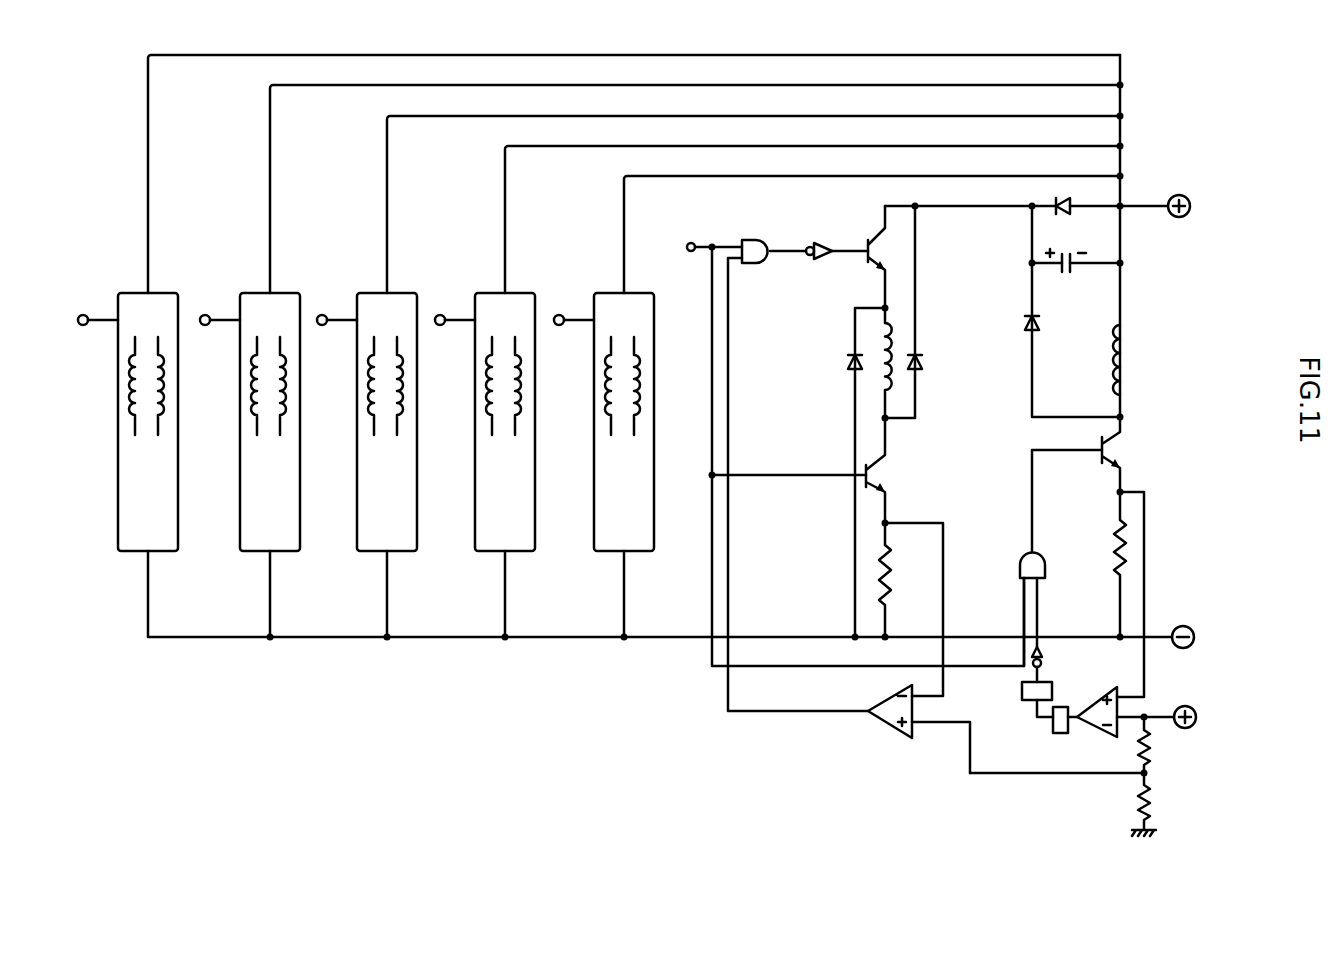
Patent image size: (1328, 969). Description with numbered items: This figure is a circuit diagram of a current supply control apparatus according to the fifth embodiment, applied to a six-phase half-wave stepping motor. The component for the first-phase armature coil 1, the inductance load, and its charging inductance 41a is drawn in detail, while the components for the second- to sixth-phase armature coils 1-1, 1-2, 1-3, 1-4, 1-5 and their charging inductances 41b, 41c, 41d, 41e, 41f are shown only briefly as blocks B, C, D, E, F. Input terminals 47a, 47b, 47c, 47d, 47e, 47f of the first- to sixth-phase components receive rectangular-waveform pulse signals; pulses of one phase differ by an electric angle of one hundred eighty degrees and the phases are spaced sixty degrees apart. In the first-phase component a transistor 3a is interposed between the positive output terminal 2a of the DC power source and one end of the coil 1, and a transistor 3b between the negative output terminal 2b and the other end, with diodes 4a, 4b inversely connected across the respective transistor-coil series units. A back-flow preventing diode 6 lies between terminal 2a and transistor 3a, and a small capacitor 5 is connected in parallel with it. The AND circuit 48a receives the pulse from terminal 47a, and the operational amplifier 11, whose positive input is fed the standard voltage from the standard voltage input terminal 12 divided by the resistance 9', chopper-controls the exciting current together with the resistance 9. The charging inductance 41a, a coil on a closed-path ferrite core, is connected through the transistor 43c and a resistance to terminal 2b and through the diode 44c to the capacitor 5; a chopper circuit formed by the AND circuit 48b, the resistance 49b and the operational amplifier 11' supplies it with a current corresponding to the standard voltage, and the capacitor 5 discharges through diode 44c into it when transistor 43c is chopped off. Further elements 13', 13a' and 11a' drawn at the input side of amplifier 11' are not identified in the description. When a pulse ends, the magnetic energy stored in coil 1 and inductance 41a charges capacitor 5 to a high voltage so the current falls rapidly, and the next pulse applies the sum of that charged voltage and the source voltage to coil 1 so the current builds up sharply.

The input terminal 47a is at (690, 243).
The input terminal 47b is at (560, 315).
The input terminal 47c is at (441, 315).
The input terminal 47d is at (323, 315).
The input terminal 47e is at (206, 315).
The input terminal 47f is at (84, 315).
The AND circuit 48a is at (752, 240).
The AND circuit 48b is at (1032, 552).
The transistor 3a is at (878, 238).
The transistor 3b is at (880, 478).
The transistor 43c is at (1106, 446).
The exciting coil 1 is at (890, 376).
The armature coil 1-1 is at (607, 388).
The armature coil 1-2 is at (488, 388).
The armature coil 1-3 is at (370, 388).
The armature coil 1-4 is at (253, 388).
The armature coil 1-5 is at (131, 388).
The charging inductance 41a is at (1125, 355).
The charging inductance 41b is at (641, 417).
The charging inductance 41c is at (517, 368).
The charging inductance 41d is at (399, 368).
The charging inductance 41e is at (282, 368).
The charging inductance 41f is at (160, 368).
The diode 4a is at (922, 362).
The diode 4b is at (848, 360).
The diode 44c is at (1025, 324).
The back-flow preventing diode 6 is at (1066, 212).
The capacitor 5 is at (1066, 274).
The resistance 9 is at (903, 591).
The resistance 9' is at (1164, 776).
The resistance 49b is at (1126, 533).
The operational amplifier 11 is at (890, 728).
The operational amplifier 11' is at (1092, 728).
The element 11a' is at (1024, 734).
The element 13' is at (1010, 698).
The terminal 13a' is at (1076, 665).
The positive output terminal 2a is at (1188, 200).
The negative output terminal 2b is at (1192, 630).
The standard voltage input terminal 12 is at (1217, 713).
The block B is at (594, 517).
The block C is at (475, 517).
The block D is at (357, 517).
The block E is at (240, 517).
The block F is at (118, 517).